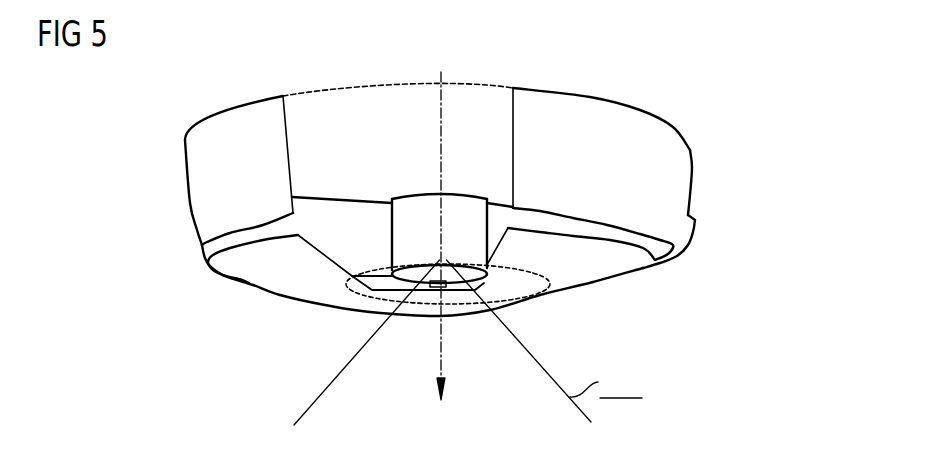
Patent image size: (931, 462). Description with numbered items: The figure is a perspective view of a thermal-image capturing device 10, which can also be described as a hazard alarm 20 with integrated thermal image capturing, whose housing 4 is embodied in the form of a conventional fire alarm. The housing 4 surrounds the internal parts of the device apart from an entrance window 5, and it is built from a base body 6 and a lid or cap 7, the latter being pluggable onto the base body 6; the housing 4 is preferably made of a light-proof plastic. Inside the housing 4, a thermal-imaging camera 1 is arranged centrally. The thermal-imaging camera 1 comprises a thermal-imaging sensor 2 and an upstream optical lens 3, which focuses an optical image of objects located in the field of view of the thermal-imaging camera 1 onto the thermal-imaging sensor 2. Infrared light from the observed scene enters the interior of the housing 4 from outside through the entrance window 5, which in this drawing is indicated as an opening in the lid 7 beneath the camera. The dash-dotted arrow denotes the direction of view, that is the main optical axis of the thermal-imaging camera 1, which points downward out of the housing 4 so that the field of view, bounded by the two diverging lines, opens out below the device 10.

The thermal-imaging camera 1 is at (388, 263).
The thermal-imaging sensor 2 is at (410, 234).
The optical lens 3 is at (437, 290).
The housing 4 is at (471, 214).
The entrance window 5 is at (528, 297).
The base body 6 is at (668, 158).
The lid 7 is at (607, 277).
The thermal-image capturing device 10 is at (486, 240).
The hazard alarm 20 is at (690, 90).